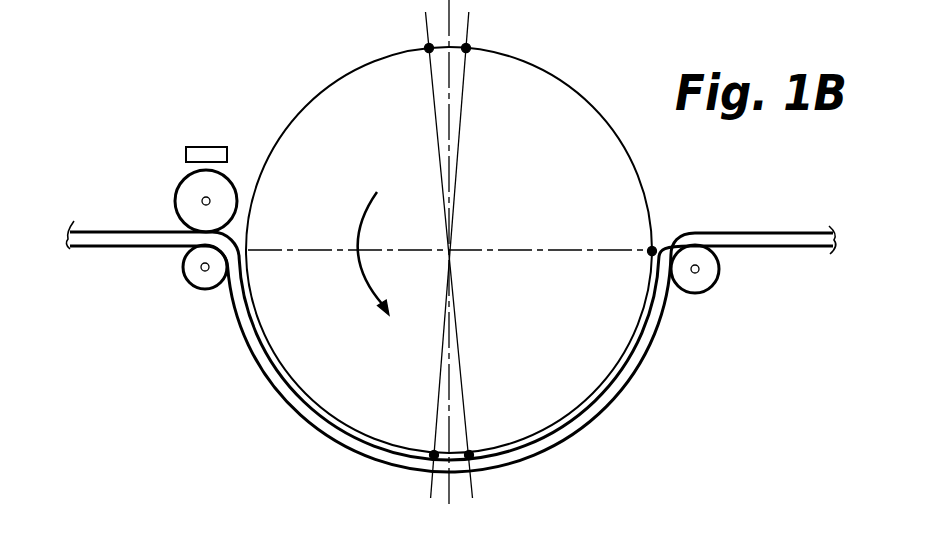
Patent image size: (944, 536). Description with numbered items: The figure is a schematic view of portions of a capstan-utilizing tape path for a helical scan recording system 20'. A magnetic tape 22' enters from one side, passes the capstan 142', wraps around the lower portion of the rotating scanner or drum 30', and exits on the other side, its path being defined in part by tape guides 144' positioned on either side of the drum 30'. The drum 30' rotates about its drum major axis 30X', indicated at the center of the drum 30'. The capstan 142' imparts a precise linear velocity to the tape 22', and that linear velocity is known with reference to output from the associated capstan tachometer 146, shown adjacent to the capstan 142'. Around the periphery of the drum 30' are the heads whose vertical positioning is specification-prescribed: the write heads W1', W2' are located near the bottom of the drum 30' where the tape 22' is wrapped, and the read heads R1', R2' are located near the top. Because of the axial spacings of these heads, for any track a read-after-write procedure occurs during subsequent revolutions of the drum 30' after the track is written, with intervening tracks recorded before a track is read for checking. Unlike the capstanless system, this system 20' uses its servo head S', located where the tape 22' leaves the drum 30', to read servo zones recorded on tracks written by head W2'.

The capstan-utilizing tape path for a helical scan recording system 20' is at (253, 174).
The magnetic tape 22' is at (450, 346).
The drum 30' is at (449, 250).
The drum major axis 30X' is at (450, 252).
The capstan 142' is at (162, 176).
The tape guides 144' is at (413, 293).
The sensor 146 is at (209, 146).
The servo head S' is at (670, 218).
The read head R1' is at (426, 255).
The read head R2' is at (476, 255).
The write head W1' is at (489, 433).
The write head W2' is at (401, 433).